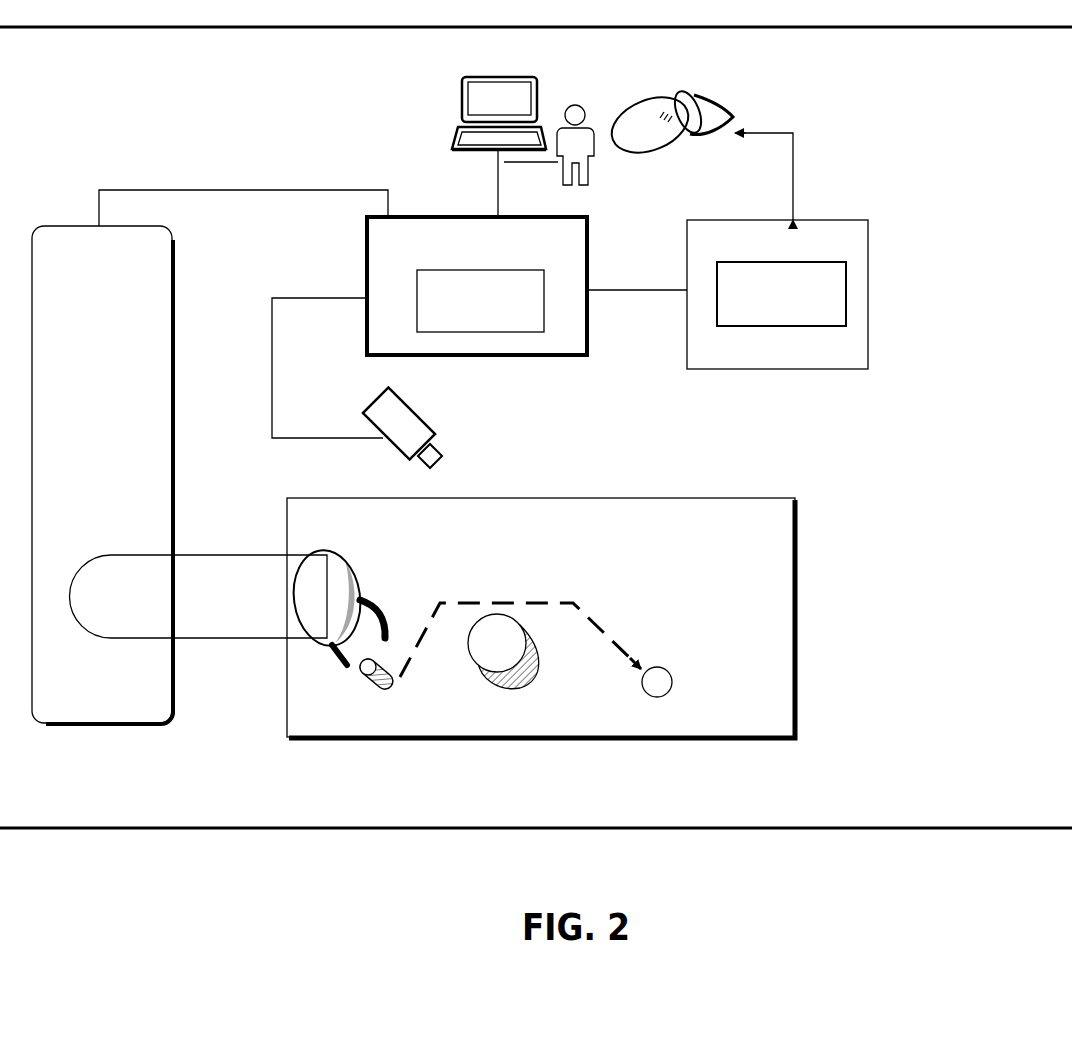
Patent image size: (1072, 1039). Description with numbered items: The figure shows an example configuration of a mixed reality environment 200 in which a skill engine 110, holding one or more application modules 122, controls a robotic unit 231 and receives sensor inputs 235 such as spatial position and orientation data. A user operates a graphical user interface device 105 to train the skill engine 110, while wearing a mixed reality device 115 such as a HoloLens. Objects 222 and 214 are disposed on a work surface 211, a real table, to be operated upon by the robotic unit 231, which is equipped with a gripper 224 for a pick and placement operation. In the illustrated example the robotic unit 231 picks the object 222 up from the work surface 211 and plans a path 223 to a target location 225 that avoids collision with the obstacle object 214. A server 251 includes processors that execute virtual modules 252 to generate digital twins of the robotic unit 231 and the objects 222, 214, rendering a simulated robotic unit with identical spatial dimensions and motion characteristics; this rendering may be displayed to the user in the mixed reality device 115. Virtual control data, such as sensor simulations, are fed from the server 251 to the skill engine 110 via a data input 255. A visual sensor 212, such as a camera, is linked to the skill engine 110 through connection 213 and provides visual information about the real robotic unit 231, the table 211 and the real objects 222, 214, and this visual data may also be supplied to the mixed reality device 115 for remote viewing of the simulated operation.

The MR environment 200 is at (82, 100).
The graphical user interface device 105 is at (462, 88).
The mixed reality device 115 is at (643, 107).
The skill engine 110 is at (367, 237).
The module 122 is at (466, 298).
The sensor inputs 235 is at (200, 190).
The data input 255 is at (600, 290).
The server 251 is at (805, 370).
The virtual modules 252 is at (762, 262).
The connection between camera and skill engine 213 is at (318, 297).
The visual sensor 212 is at (372, 400).
The robotic unit 231 is at (85, 725).
The gripper 224 is at (383, 607).
The object 222 is at (397, 697).
The work surface 211 is at (537, 738).
The path 223 is at (600, 627).
The obstacle object 214 is at (538, 660).
The target location 225 is at (670, 673).